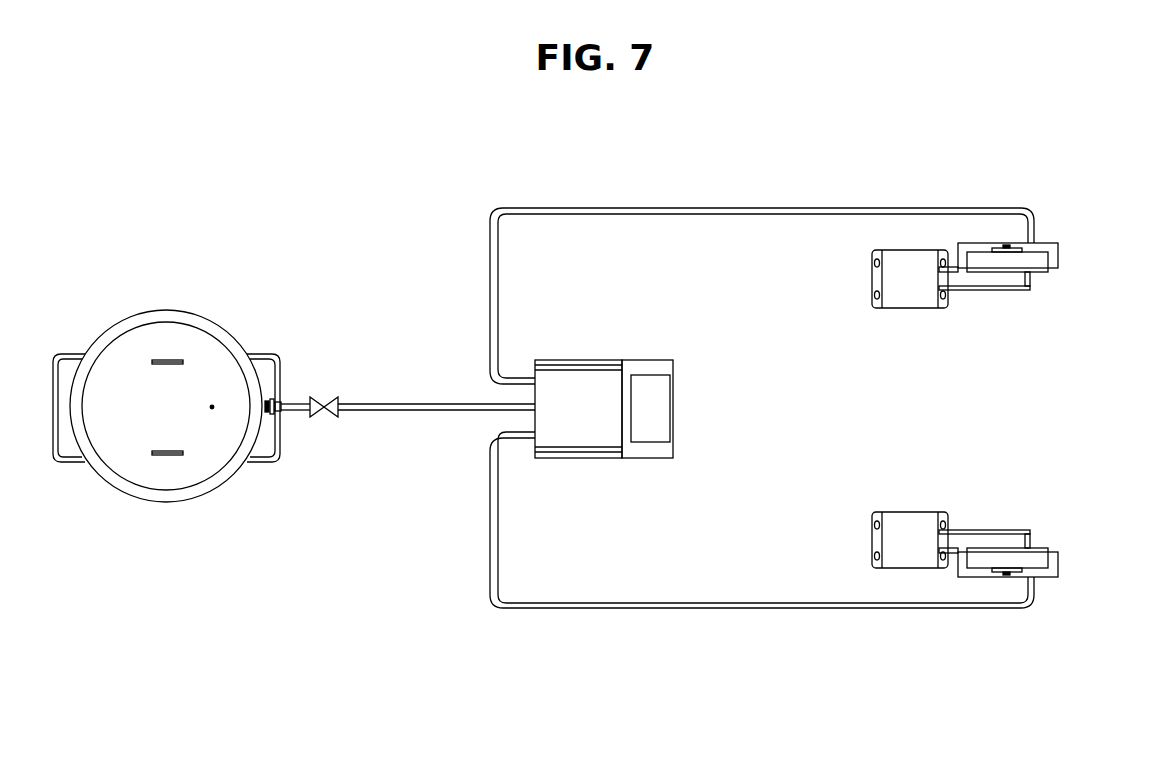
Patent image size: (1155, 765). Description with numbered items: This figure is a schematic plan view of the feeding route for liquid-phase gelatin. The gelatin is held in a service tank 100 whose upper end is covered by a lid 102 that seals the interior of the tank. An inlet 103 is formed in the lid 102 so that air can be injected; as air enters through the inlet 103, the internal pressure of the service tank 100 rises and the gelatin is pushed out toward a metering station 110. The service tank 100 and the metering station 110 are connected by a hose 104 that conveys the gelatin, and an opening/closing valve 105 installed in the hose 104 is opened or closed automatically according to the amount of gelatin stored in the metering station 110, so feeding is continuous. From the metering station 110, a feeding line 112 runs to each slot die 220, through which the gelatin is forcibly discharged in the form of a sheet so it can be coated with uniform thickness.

The service tank 100 is at (207, 387).
The lid 102 is at (138, 342).
The inlet 103 is at (212, 407).
The hose 104 is at (417, 411).
The opening/closing valve 105 is at (322, 401).
The metering station 110 is at (682, 344).
The feeding line 112 is at (705, 209).
The slot die 220 is at (1047, 243).